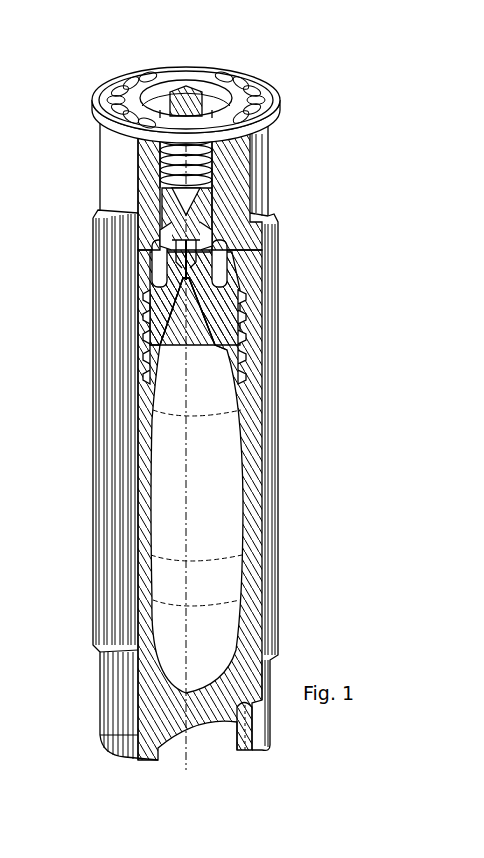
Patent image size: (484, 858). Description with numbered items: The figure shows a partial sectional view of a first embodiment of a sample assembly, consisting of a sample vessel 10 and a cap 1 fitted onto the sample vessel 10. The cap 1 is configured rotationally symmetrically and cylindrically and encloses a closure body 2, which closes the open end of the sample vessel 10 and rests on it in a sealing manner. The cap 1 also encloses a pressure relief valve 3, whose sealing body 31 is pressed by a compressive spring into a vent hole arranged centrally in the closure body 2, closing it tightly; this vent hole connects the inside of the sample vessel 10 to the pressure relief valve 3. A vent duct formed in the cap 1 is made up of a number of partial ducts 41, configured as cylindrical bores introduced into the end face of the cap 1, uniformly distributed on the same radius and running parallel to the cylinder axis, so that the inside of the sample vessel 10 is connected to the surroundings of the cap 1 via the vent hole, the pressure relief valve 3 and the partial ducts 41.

The cap 1 is at (290, 272).
The sample vessel 10 is at (300, 500).
The closure body 2 is at (230, 297).
The pressure relief valve 3 is at (228, 172).
The sealing body 31 is at (188, 248).
The partial ducts 41 is at (483, 178).